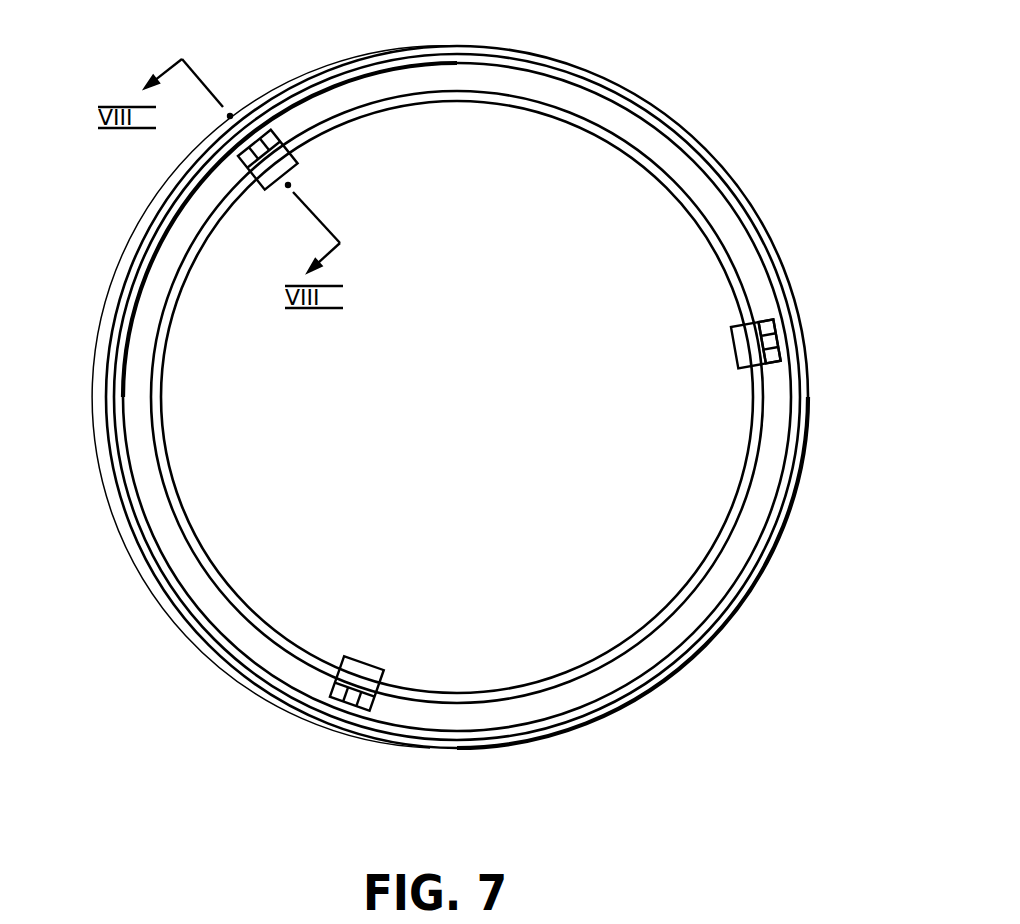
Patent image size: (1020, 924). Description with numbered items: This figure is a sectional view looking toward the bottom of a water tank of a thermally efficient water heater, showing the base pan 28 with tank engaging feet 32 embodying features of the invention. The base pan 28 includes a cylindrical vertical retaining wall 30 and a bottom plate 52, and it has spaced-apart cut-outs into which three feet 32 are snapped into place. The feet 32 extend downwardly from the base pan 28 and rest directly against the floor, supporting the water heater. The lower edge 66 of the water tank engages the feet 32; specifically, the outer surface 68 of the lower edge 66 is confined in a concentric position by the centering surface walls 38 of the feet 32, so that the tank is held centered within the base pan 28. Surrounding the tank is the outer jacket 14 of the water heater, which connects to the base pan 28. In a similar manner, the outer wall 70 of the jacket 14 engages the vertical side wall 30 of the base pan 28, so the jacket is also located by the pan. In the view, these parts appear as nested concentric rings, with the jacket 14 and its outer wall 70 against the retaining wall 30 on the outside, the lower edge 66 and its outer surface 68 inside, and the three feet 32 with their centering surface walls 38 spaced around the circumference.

The outer jacket 14 is at (681, 110).
The outer wall 70 is at (713, 162).
The vertical retaining wall 30 is at (760, 210).
The base pan 28 is at (821, 462).
The outer surface 68 is at (150, 400).
The lower edge 66 is at (223, 554).
The bottom plate 52 is at (468, 430).
The feet 32 is at (315, 175).
The centering surface walls 38 is at (779, 338).